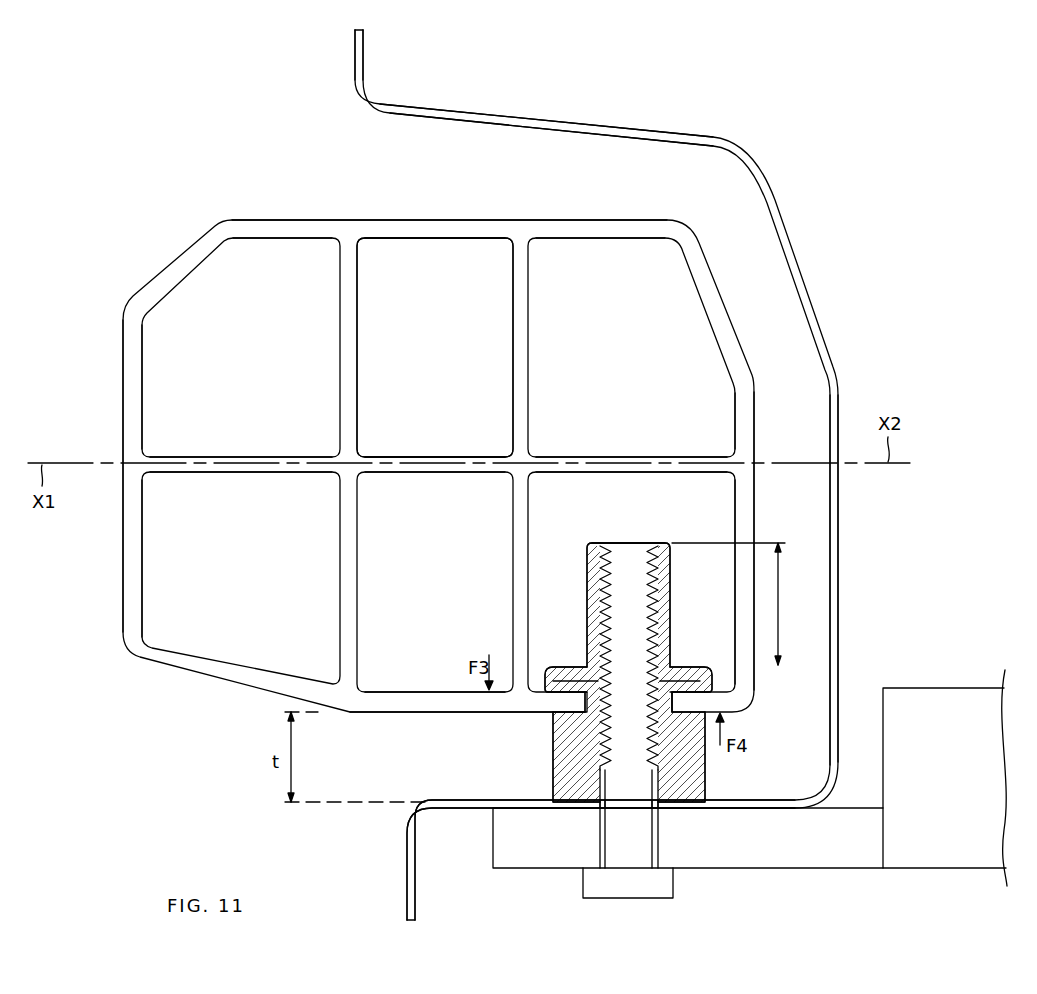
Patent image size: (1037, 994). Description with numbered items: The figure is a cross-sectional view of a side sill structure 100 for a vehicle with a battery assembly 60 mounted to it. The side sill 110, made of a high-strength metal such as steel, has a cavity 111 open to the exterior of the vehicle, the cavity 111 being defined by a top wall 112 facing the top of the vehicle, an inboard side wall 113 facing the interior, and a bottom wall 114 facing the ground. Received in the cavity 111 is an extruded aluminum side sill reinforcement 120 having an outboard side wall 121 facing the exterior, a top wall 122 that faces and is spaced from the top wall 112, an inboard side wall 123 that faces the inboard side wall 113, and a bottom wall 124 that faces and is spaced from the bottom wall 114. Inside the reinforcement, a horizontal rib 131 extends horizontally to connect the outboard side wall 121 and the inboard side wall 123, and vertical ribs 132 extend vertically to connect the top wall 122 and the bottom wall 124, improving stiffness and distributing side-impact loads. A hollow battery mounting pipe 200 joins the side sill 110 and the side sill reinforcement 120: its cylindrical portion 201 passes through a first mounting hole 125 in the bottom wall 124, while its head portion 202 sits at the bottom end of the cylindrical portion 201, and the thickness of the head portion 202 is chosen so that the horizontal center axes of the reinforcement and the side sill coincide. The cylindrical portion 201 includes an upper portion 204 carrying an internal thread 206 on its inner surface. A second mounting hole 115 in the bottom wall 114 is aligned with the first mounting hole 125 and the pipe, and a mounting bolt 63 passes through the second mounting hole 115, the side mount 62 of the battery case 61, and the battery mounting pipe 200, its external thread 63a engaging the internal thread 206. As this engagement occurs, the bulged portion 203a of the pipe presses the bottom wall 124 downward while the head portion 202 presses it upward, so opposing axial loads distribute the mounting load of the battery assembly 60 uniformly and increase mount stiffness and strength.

The side sill structure 100 is at (112, 168).
The side sill 110 is at (792, 231).
The cavity 111 is at (412, 160).
The top wall 112 is at (543, 118).
The inboard side wall 113 is at (840, 527).
The bottom wall 114 is at (462, 812).
The second mounting hole 115 is at (598, 804).
The side sill reinforcement 120 is at (104, 415).
The outboard side wall 121 is at (121, 528).
The top wall 122 is at (443, 220).
The inboard side wall 123 is at (757, 421).
The bottom wall 124 is at (434, 714).
The first mounting hole 125 is at (592, 697).
The horizontal rib 131 is at (433, 474).
The vertical rib 132 is at (514, 348).
The battery mounting pipe 200 is at (530, 761).
The cylindrical portion 201 is at (575, 595).
The head portion 202 is at (707, 785).
The bulged portion 203a is at (714, 665).
The upper portion 204 is at (745, 604).
The internal thread 206 is at (650, 543).
The battery assembly 60 is at (962, 880).
The battery case 61 is at (920, 852).
The side mount 62 is at (789, 870).
The mounting bolt 63 is at (628, 900).
The external thread 63a is at (656, 615).